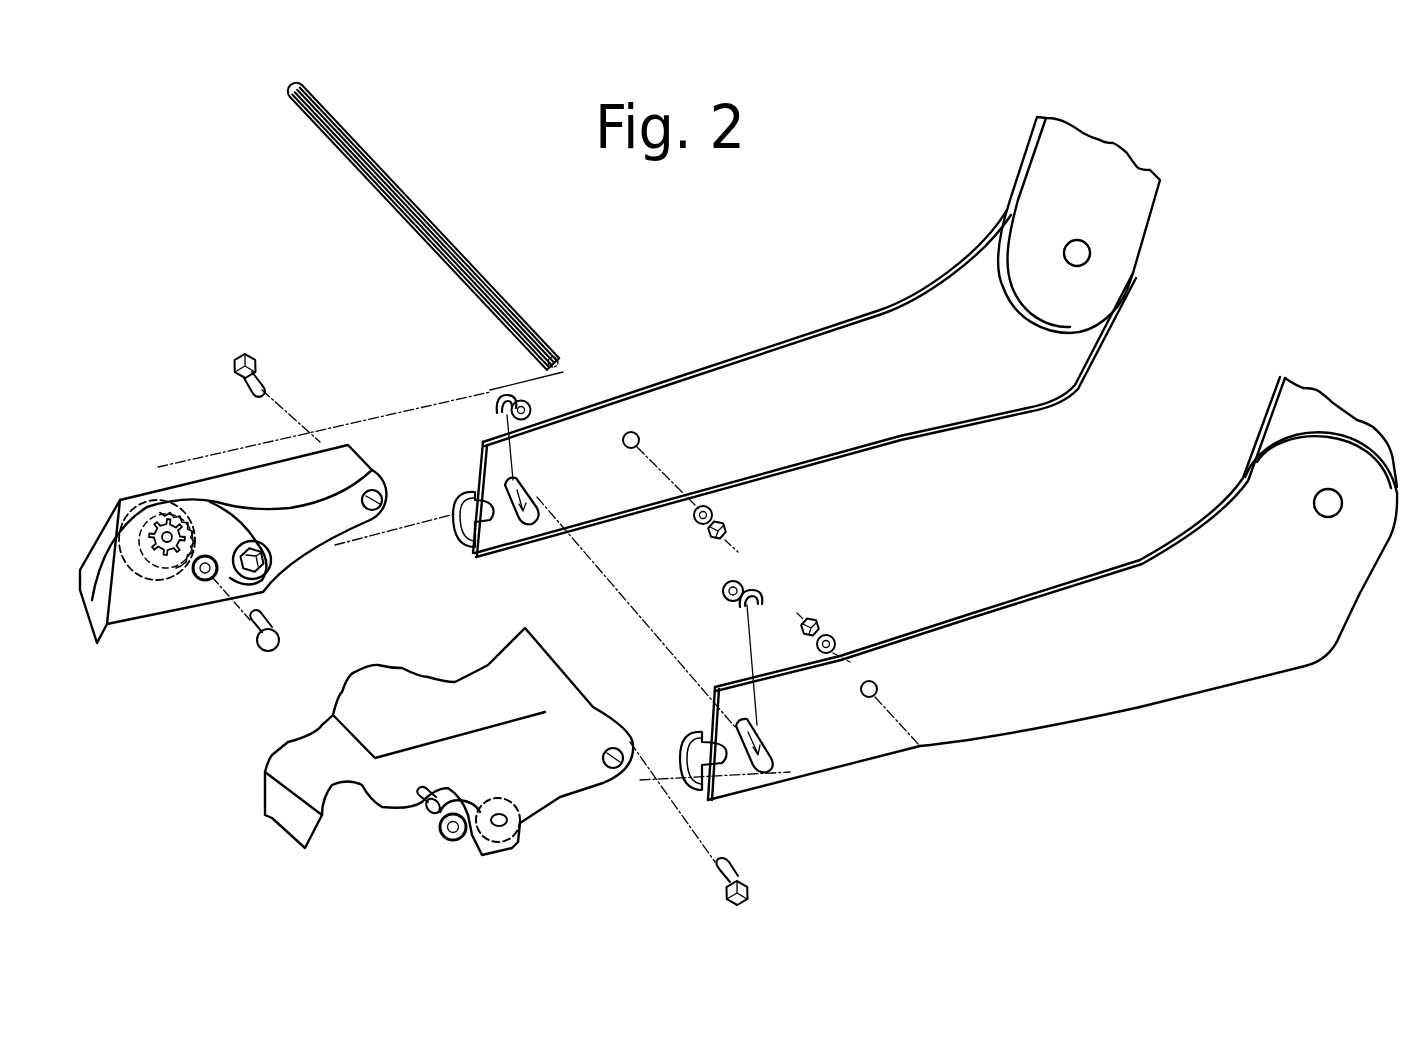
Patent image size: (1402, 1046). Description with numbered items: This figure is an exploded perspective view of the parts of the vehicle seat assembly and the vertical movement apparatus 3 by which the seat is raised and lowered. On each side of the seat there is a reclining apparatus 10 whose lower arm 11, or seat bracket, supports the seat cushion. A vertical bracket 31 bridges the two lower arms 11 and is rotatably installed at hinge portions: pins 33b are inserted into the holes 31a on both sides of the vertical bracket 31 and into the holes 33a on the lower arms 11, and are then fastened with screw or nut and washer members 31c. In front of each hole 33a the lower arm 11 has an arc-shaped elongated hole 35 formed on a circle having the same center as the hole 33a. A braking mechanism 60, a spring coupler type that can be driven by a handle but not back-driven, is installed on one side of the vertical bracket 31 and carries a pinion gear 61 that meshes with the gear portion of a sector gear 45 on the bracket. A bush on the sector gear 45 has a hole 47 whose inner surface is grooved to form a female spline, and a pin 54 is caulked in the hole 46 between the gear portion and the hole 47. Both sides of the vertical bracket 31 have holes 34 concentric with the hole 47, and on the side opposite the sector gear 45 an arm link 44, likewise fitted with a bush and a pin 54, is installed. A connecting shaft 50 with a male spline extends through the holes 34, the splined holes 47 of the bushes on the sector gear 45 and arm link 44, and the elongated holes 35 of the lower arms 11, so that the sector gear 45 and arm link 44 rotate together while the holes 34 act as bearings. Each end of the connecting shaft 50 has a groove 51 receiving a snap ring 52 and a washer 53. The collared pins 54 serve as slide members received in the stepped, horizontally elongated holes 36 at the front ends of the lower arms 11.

The vertical movement apparatus 3 is at (170, 382).
The reclining apparatus 10 is at (984, 210).
The lower arm 11 is at (804, 358).
The vertical bracket 31 is at (328, 470).
The hole 31a is at (380, 513).
The screw and washer member 31c is at (736, 514).
The hole 33a is at (639, 433).
The pin 33b is at (254, 353).
The hole 34 is at (505, 826).
The elongated hole 35 is at (536, 498).
The elongated hole 36 is at (468, 491).
The arm link 44 is at (447, 840).
The sector gear 45 is at (226, 525).
The hole 46 is at (205, 555).
The hole 47 is at (265, 577).
The connecting shaft 50 is at (468, 243).
The groove 51 is at (290, 103).
The snap ring 52 is at (498, 396).
The washer 53 is at (519, 401).
The pin 54 is at (257, 645).
The braking mechanism 60 is at (152, 512).
The pinion gear 61 is at (147, 523).